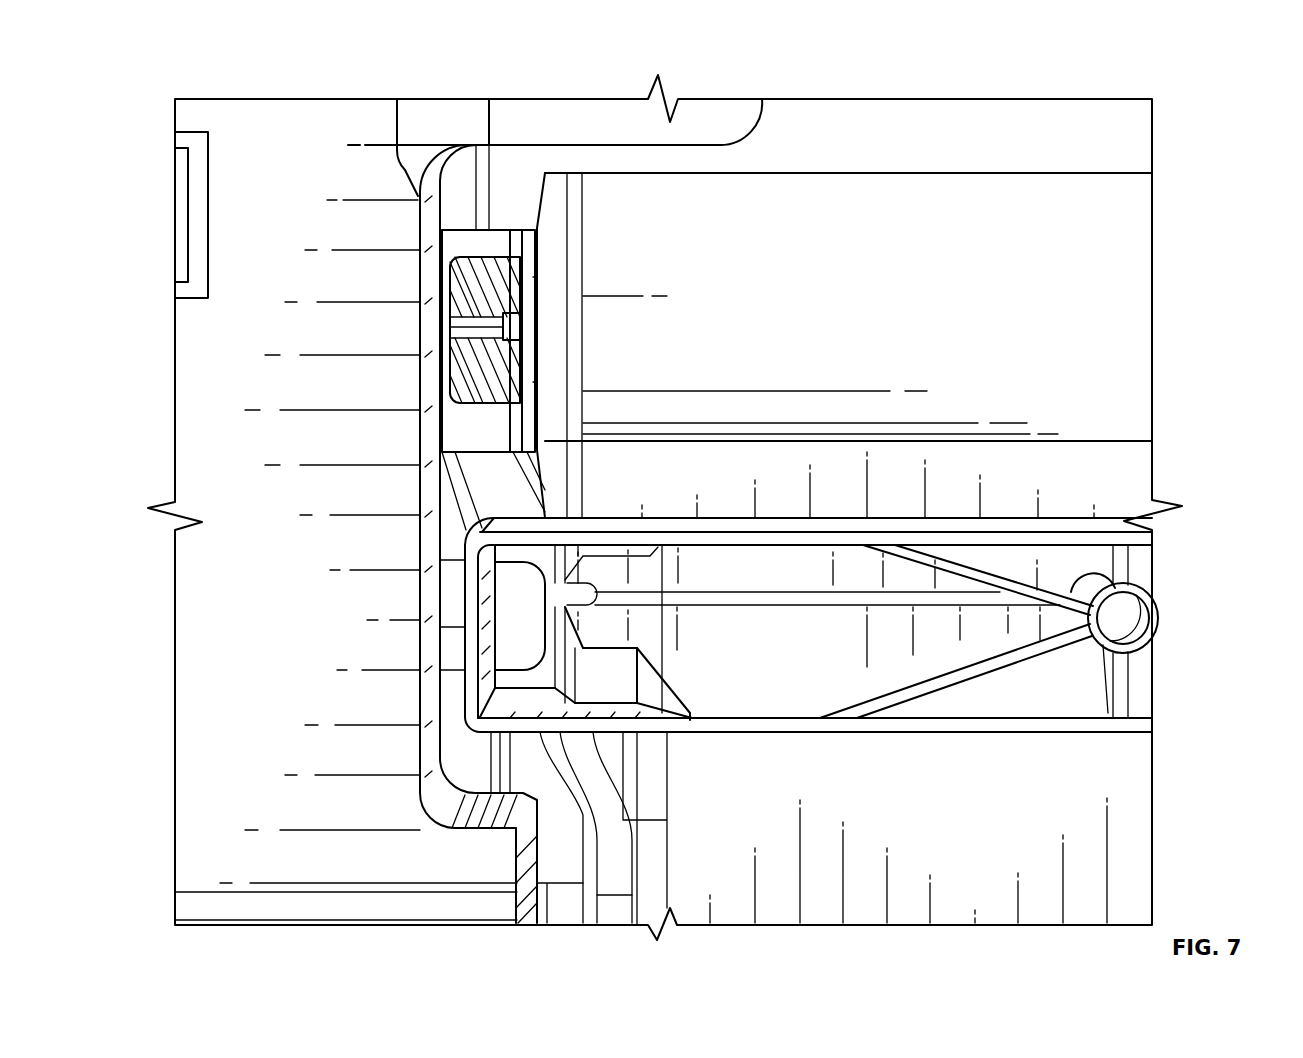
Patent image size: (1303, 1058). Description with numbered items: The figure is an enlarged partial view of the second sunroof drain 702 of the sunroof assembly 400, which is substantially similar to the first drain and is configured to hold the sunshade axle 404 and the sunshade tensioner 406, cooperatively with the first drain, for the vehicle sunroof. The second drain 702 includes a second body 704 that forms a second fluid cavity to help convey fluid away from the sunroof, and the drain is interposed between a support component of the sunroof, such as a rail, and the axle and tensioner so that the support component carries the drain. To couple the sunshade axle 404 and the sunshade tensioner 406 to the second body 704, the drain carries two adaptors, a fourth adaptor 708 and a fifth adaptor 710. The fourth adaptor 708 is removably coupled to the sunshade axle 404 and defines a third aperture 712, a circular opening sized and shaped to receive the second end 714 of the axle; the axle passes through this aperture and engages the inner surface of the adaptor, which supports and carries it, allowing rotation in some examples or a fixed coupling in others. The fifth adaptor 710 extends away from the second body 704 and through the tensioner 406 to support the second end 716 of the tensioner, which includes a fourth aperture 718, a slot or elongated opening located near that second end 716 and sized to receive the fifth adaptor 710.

The assembly 400 is at (173, 101).
The sunshade axle 404 is at (514, 312).
The sunshade tensioner 406 is at (980, 733).
The second sunroof drain 702 is at (443, 190).
The second body 704 is at (346, 526).
The fourth adaptor 708 is at (528, 230).
The fifth adaptor 710 is at (510, 558).
The third aperture 712 is at (518, 345).
The second end 714 is at (500, 323).
The second end 716 is at (463, 627).
The fourth aperture 718 is at (495, 637).